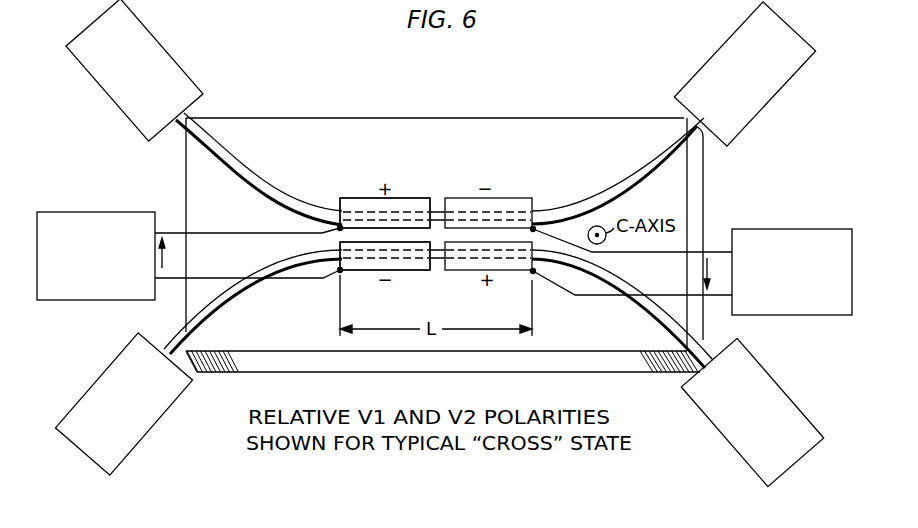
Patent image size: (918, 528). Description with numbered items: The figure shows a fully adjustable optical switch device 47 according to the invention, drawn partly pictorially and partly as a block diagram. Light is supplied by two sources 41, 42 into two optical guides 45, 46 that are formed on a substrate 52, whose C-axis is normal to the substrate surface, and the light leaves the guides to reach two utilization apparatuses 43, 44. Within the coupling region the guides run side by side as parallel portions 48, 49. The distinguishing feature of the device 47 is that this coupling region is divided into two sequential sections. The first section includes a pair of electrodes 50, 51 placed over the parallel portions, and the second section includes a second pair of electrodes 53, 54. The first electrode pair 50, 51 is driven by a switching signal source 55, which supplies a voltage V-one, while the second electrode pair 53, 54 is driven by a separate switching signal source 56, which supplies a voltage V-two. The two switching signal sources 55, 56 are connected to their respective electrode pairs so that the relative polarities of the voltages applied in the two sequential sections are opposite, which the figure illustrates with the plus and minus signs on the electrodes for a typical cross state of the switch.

The source 41 is at (106, 104).
The source 42 is at (97, 377).
The utilization apparatus 43 is at (771, 103).
The utilization apparatus 44 is at (781, 386).
The guide 45 is at (247, 182).
The guide 46 is at (266, 296).
The device 47 is at (465, 152).
The parallel portion 48 is at (359, 222).
The parallel portion 49 is at (358, 252).
The electrode 50 is at (410, 198).
The electrode 51 is at (416, 270).
The substrate 52 is at (288, 117).
The electrode 53 is at (517, 198).
The electrode 54 is at (517, 270).
The switching signal source 55 is at (89, 212).
The switching signal source 56 is at (787, 229).